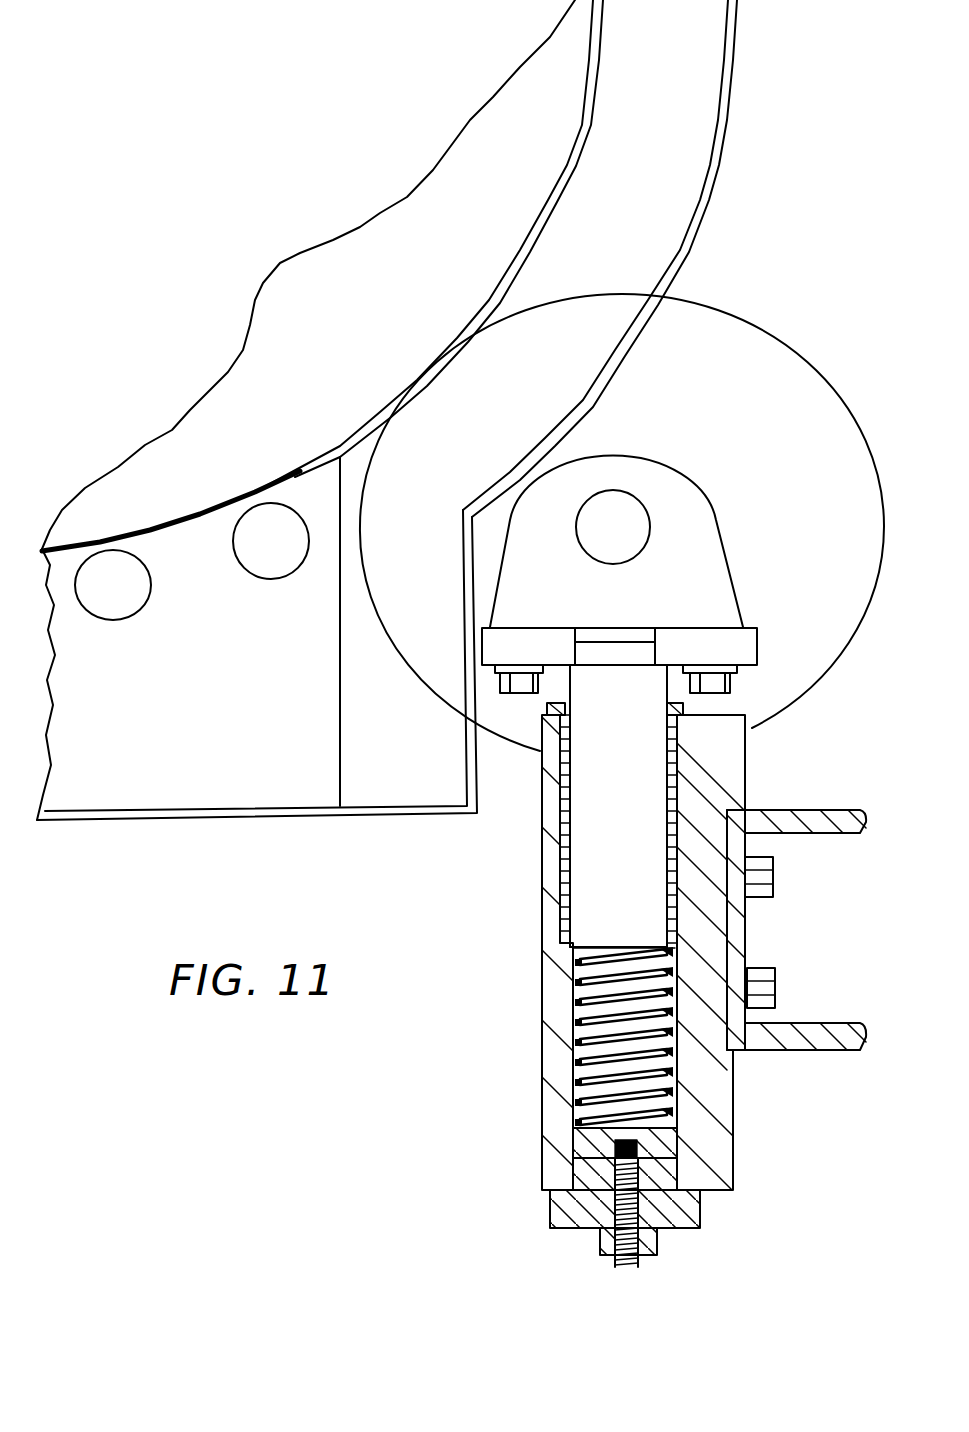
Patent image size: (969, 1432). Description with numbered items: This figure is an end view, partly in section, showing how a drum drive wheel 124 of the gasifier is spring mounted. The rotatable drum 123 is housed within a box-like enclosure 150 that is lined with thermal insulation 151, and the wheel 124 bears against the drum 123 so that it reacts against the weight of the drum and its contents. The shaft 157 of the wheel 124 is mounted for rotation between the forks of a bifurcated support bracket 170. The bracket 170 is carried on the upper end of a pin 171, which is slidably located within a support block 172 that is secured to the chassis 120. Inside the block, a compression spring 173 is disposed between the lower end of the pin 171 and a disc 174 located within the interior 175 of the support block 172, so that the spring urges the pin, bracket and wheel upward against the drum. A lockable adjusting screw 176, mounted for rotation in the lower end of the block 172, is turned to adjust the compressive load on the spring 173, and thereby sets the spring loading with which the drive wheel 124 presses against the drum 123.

The chassis 120 is at (766, 931).
The rotatable drum 123 is at (590, 125).
The drum drive wheel 124 is at (800, 347).
The box-like enclosure 150 is at (707, 200).
The thermal insulation 151 is at (434, 275).
The shaft 157 is at (637, 528).
The bifurcated support bracket 170 is at (640, 574).
The pin 171 is at (642, 803).
The support block 172 is at (703, 1110).
The compression spring 173 is at (590, 1060).
The disc 174 is at (660, 1148).
The interior of the support block 175 is at (670, 1042).
The lockable adjusting screw 176 is at (657, 1245).